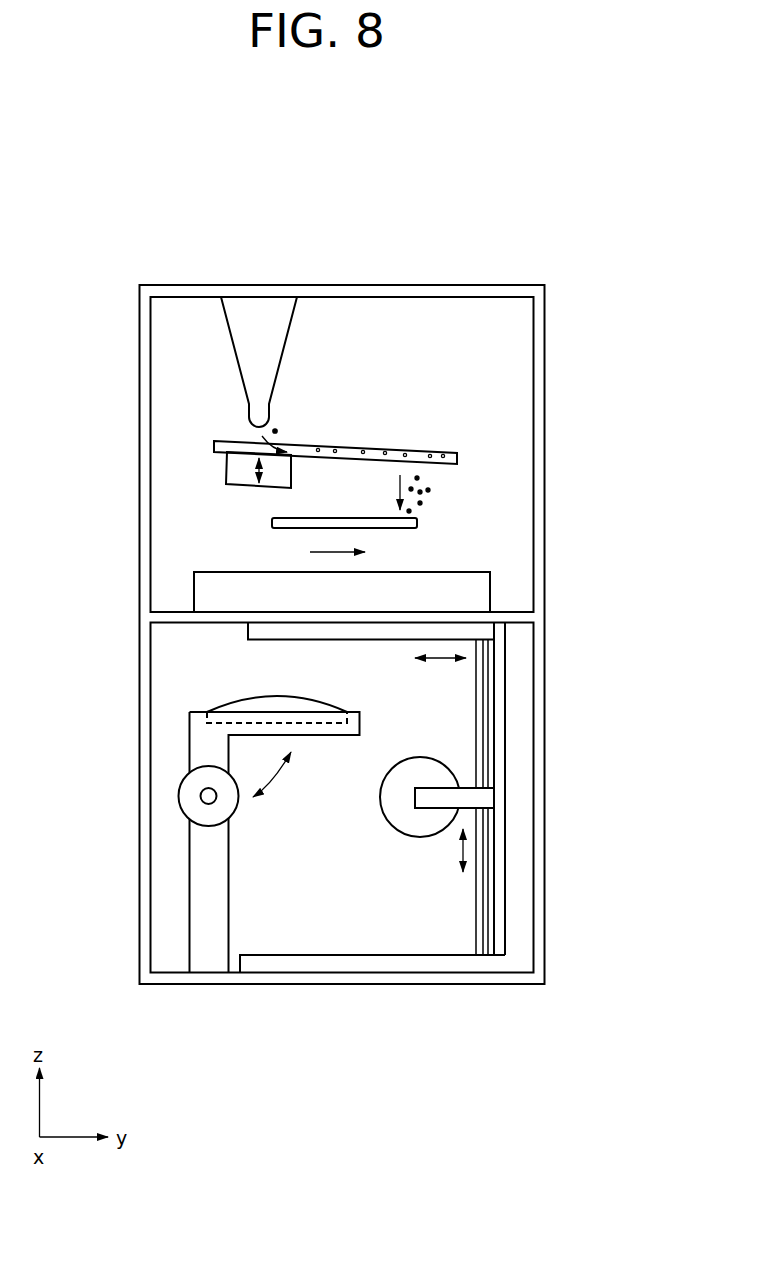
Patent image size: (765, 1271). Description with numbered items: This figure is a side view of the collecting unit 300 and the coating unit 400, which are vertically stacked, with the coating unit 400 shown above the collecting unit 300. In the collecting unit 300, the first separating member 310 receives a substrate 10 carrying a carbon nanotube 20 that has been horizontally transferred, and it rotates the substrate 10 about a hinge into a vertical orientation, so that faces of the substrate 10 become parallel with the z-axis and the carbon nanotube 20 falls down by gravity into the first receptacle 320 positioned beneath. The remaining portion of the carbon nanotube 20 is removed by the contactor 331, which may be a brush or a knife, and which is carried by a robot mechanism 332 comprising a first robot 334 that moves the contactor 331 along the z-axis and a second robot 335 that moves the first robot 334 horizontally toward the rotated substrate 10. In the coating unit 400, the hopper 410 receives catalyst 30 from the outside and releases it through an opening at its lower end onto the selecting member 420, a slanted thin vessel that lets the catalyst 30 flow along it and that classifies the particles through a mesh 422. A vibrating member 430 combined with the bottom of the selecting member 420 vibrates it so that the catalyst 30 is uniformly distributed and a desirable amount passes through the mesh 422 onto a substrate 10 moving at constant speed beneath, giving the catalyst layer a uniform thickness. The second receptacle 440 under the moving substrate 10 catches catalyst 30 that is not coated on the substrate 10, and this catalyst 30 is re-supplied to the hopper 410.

The substrate 10 is at (272, 523).
The carbon nanotube 20 is at (238, 703).
The catalyst 30 is at (280, 426).
The collecting unit 300 is at (172, 937).
The first separating member 310 is at (205, 856).
The first receptacle 320 is at (287, 965).
The contactor 331 is at (412, 829).
The robot mechanism 332 is at (466, 785).
The first robot 334 is at (500, 633).
The second robot 335 is at (630, 615).
The coating unit 400 is at (507, 385).
The hopper 410 is at (290, 343).
The selecting member 420 is at (458, 452).
The mesh 422 is at (421, 463).
The vibrating member 430 is at (238, 466).
The second receptacle 440 is at (205, 590).